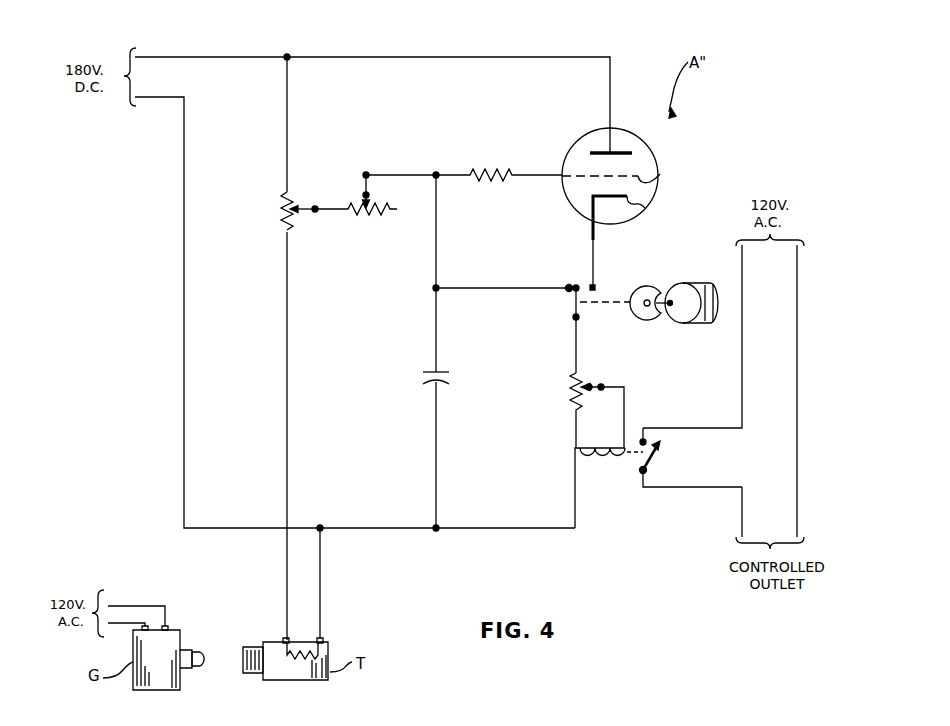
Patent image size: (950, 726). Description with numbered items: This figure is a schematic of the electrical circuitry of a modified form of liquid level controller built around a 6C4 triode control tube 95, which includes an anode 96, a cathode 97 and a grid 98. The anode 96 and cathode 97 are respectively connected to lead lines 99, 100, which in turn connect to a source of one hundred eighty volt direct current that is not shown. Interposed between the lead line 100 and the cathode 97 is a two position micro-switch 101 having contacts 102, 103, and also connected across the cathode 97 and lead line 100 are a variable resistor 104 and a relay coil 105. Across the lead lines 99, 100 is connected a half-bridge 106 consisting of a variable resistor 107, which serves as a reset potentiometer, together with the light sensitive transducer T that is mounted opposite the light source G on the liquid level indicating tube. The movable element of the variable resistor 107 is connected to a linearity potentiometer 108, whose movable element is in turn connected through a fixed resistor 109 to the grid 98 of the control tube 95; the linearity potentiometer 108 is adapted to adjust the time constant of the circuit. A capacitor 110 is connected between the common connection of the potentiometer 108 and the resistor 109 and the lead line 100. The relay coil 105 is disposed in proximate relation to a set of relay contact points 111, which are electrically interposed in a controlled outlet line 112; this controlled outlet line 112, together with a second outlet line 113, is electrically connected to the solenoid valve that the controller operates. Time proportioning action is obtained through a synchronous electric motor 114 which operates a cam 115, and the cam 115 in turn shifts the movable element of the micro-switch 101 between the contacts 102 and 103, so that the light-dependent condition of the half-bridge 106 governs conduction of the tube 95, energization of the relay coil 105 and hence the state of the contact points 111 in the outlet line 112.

The triode control tube 95 is at (655, 150).
The anode 96 is at (630, 150).
The cathode 97 is at (645, 208).
The grid 98 is at (660, 174).
The lead line 99 is at (565, 57).
The lead line 100 is at (184, 223).
The two position micro-switch 101 is at (573, 303).
The contact 102 is at (593, 286).
The contact 103 is at (569, 285).
The variable resistor 104 is at (572, 385).
The relay coil 105 is at (612, 458).
The half-bridge 106 is at (287, 386).
The variable resistor 107 is at (282, 218).
The linearity potentiometer 108 is at (361, 218).
The fixed resistor 109 is at (488, 182).
The capacitor 110 is at (423, 379).
The relay contact points 111 is at (654, 456).
The controlled outlet line 112 is at (744, 350).
The second outlet line 113 is at (795, 363).
The synchronous electric motor 114 is at (698, 322).
The cam 115 is at (651, 314).